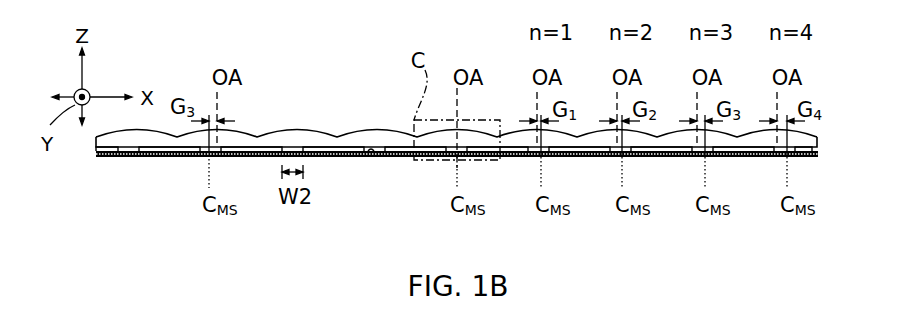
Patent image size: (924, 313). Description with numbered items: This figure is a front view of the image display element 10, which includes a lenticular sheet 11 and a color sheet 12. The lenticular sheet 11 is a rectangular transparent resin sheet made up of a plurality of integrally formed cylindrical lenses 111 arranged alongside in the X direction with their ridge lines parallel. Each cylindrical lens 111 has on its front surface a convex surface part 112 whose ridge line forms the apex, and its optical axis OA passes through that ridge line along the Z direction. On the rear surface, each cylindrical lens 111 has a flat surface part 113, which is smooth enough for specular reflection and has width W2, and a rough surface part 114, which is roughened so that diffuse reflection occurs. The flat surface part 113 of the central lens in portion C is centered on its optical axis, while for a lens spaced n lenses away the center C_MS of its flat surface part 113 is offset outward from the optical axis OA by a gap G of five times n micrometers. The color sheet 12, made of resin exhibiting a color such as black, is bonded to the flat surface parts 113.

The image display element 10 is at (463, 119).
The lenticular sheet 11 is at (433, 133).
The color sheet 12 is at (812, 157).
The cylindrical lens 111 is at (378, 138).
The convex surface part 112 is at (283, 131).
The flat surface part 113 is at (371, 152).
The rough surface part 114 is at (160, 152).